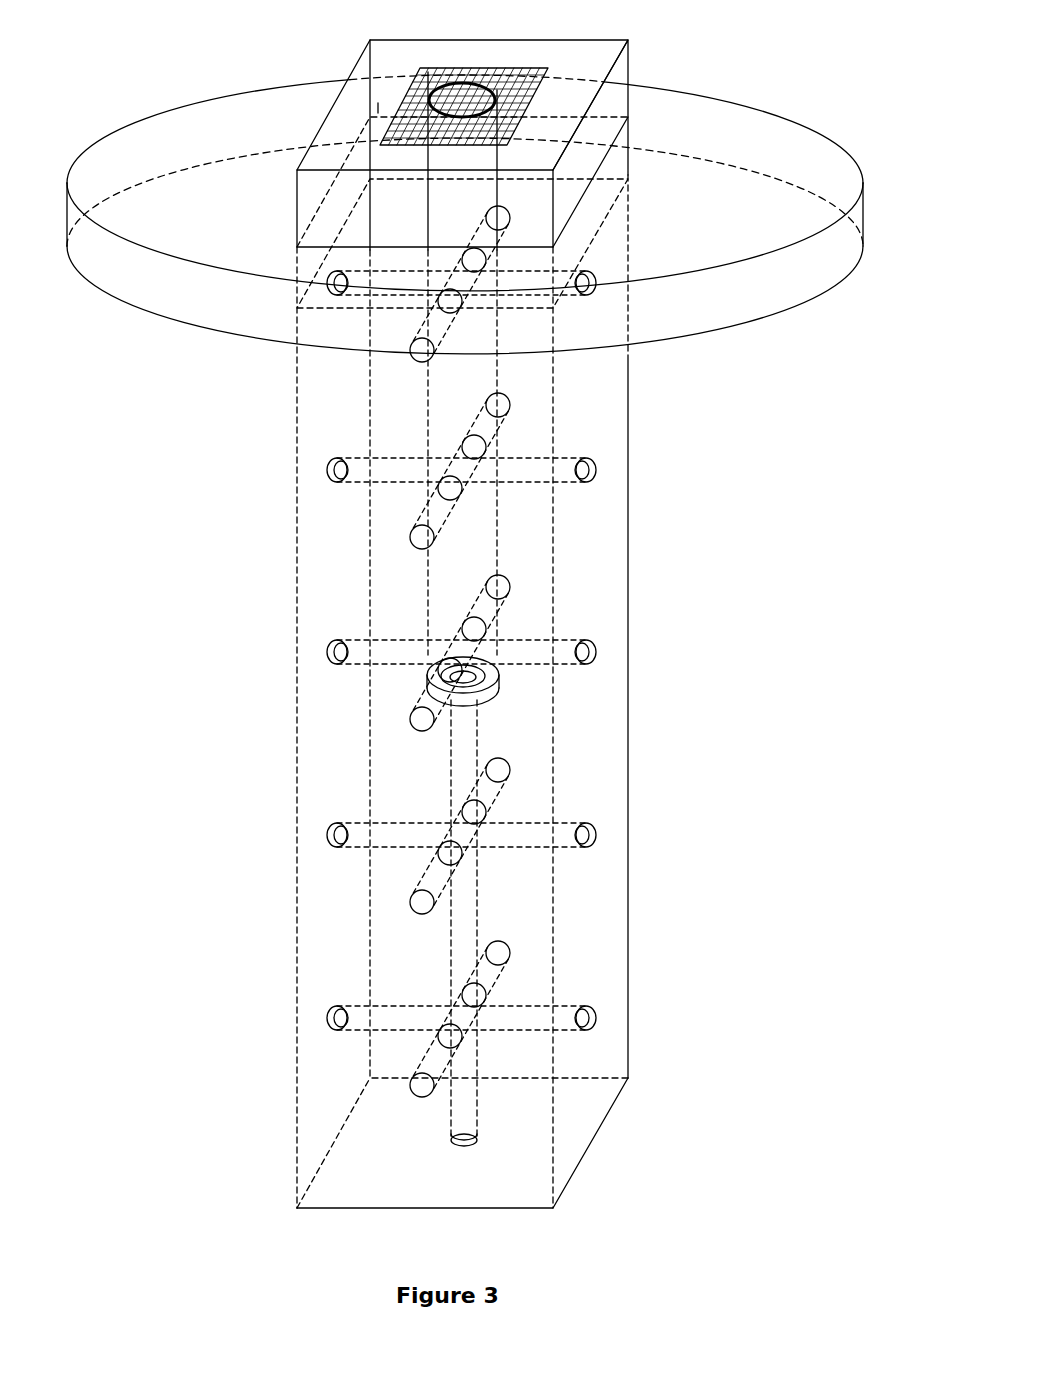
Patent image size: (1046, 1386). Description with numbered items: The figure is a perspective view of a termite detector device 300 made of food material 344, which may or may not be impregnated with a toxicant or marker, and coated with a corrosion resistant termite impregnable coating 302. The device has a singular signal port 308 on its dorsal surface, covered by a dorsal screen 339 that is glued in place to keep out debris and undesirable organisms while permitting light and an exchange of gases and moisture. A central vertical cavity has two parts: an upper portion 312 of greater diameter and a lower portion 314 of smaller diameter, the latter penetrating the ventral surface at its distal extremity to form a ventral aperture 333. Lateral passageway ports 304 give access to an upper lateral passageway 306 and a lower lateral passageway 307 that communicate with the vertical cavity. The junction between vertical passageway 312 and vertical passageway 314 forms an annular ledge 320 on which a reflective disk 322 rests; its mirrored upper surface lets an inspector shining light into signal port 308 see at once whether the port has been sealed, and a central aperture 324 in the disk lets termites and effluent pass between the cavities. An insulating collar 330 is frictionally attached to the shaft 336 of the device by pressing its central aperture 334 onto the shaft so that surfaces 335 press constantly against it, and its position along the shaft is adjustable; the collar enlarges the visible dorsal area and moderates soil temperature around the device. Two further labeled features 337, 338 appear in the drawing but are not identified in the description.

The device 300 is at (480, 625).
The corrosion resistant termite impregnable coating 302 is at (524, 691).
The lateral passageway ports 304 is at (663, 472).
The upper lateral passageway 306 is at (539, 461).
The lower lateral passageway 307 is at (399, 804).
The signal port 308 is at (566, 83).
The upper portion of vertical cavity 312 is at (590, 363).
The lower portion of vertical cavity 314 is at (338, 916).
The ledge 320 is at (589, 704).
The reflective disk 322 is at (589, 681).
The aperture 324 is at (353, 653).
The collar 330 is at (412, 229).
The ventral aperture 333 is at (601, 1181).
The central aperture 334 is at (652, 251).
The surfaces 335 is at (652, 200).
The shaft 336 is at (247, 727).
The disk 337 is at (465, 208).
The inner top edge 338 is at (282, 320).
The dorsal screen 339 is at (590, 88).
The food material 344 is at (567, 550).